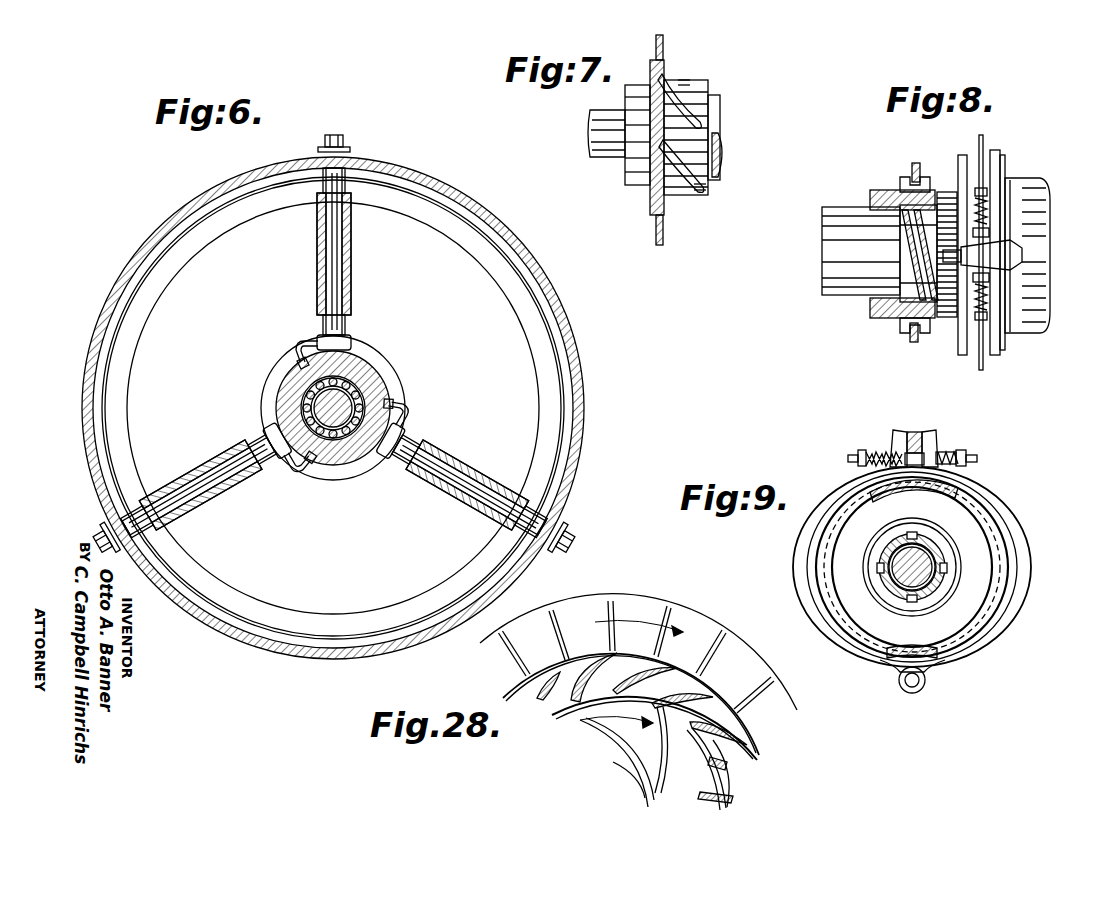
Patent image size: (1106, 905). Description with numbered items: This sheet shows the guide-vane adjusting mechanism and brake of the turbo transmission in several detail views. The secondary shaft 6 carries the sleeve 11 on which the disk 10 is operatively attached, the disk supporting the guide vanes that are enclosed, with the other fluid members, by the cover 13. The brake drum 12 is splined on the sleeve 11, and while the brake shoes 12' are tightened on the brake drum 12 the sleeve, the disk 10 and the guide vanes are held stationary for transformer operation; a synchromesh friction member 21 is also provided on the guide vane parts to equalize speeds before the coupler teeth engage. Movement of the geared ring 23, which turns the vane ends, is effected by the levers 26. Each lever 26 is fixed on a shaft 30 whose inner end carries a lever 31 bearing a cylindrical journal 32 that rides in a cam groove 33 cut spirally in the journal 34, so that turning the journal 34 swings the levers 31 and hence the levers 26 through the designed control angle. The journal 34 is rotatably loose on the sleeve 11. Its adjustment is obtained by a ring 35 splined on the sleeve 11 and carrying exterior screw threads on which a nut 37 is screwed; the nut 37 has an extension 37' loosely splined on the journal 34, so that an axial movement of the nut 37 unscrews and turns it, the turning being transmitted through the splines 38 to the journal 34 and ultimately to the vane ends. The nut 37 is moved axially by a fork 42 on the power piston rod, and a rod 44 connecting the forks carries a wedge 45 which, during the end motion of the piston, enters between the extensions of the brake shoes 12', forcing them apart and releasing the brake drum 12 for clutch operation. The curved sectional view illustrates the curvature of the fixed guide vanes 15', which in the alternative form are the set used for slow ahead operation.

In FIG. 6, the secondary shaft 6 is at (357, 399).
In FIG. 7, the secondary shaft 6 is at (605, 116).
In FIG. 9, the secondary shaft 6 is at (937, 577).
In FIG. 6, the disk 10 is at (483, 283).
In FIG. 7, the disk 10 is at (661, 230).
In FIG. 6, the sleeve 11 is at (350, 379).
In FIG. 7, the sleeve 11 is at (722, 157).
In FIG. 9, the sleeve 11 is at (943, 552).
In FIG. 6, the cover 13 is at (447, 180).
In FIG. 6, the geared ring 23 is at (497, 231).
In FIG. 6, the lever 26 is at (352, 158).
In FIG. 6, the shaft 30 is at (335, 259).
In FIG. 6, the lever 31 is at (306, 347).
In FIG. 6, the cylindrical journal 32 is at (298, 365).
In FIG. 6, the cam groove 33 is at (312, 378).
In FIG. 7, the cam groove 33 is at (674, 77).
In FIG. 6, the journal 34 is at (373, 387).
In FIG. 7, the journal 34 is at (698, 143).
In FIG. 8, the brake drum 12 is at (1024, 252).
In FIG. 9, the brake drum 12 is at (910, 574).
In FIG. 8, the brake shoes 12' is at (1001, 256).
In FIG. 9, the brake shoes 12' is at (930, 561).
In FIG. 8, the friction member 21 is at (1043, 319).
In FIG. 8, the ring 35 is at (905, 312).
In FIG. 8, the nut 37 is at (907, 246).
In FIG. 8, the extension 37' is at (891, 250).
In FIG. 8, the splines 38 is at (830, 229).
In FIG. 8, the fork 42 is at (917, 163).
In FIG. 8, the rod 44 is at (1040, 252).
In FIG. 8, the wedge 45 is at (982, 255).
In FIG. 9, the wedge 45 is at (914, 434).
In FIG. 28, the guide vanes 15' is at (642, 699).